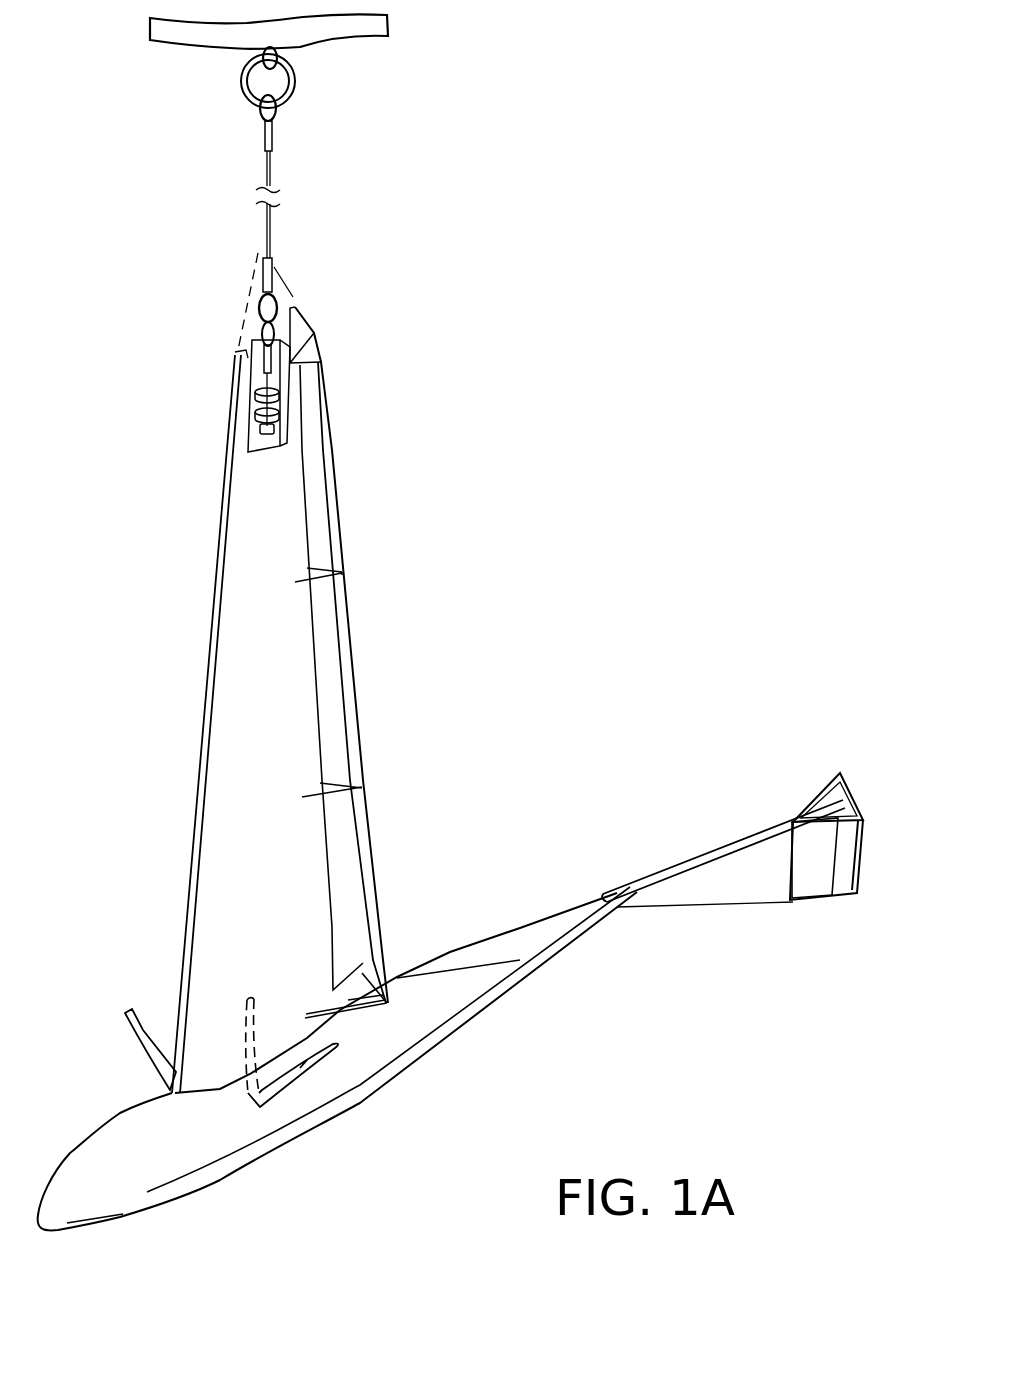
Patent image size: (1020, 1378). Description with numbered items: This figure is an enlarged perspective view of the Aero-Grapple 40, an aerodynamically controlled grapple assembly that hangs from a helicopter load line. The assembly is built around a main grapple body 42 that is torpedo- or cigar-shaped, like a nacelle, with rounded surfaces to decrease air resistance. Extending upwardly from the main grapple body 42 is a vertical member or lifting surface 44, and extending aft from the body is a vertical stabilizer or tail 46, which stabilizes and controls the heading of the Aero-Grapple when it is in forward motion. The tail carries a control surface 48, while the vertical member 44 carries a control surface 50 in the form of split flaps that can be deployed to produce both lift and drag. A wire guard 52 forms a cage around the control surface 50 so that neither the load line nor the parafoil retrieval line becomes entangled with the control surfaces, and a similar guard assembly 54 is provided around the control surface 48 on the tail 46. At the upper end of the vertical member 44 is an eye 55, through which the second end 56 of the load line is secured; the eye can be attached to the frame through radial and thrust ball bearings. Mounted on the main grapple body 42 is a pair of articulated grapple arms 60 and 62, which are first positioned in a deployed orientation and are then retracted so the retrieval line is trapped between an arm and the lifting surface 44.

The Aero-Grapple 40 is at (150, 640).
The main grapple body 42 is at (120, 1188).
The vertical member or lifting surface 44 is at (227, 768).
The vertical stabilizer or tail 46 is at (707, 885).
The control surface 48 is at (805, 872).
The control surface 50 is at (337, 725).
The wire guard 52 is at (372, 853).
The guard assembly 54 is at (863, 860).
The eye 55 is at (275, 337).
The second end of the load line 56 is at (273, 232).
The grapple arm 60 is at (300, 1077).
The grapple arm 62 is at (137, 1047).